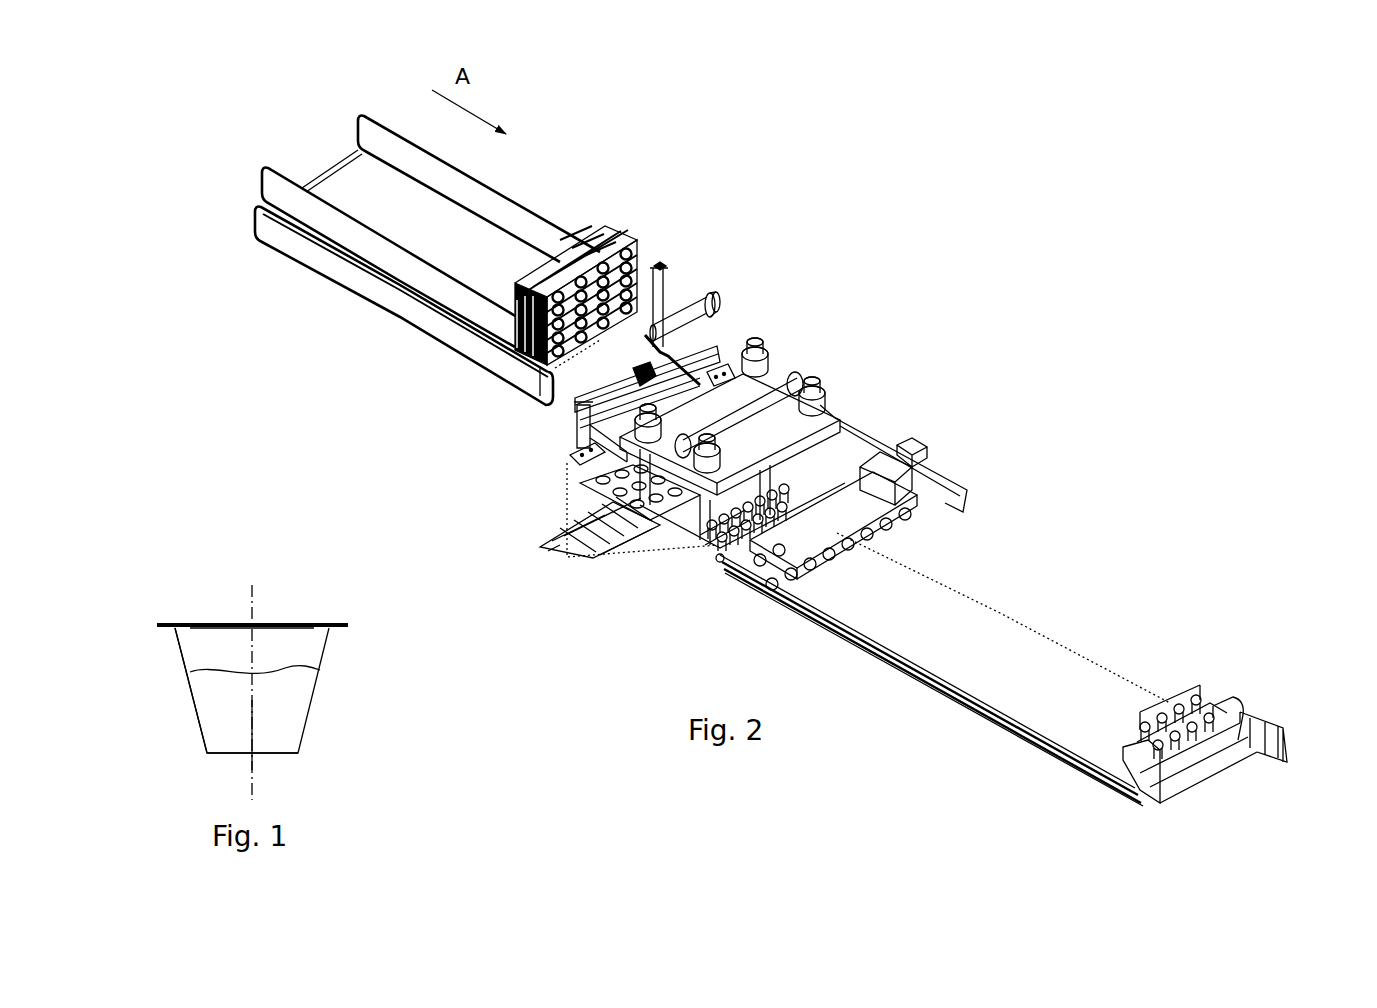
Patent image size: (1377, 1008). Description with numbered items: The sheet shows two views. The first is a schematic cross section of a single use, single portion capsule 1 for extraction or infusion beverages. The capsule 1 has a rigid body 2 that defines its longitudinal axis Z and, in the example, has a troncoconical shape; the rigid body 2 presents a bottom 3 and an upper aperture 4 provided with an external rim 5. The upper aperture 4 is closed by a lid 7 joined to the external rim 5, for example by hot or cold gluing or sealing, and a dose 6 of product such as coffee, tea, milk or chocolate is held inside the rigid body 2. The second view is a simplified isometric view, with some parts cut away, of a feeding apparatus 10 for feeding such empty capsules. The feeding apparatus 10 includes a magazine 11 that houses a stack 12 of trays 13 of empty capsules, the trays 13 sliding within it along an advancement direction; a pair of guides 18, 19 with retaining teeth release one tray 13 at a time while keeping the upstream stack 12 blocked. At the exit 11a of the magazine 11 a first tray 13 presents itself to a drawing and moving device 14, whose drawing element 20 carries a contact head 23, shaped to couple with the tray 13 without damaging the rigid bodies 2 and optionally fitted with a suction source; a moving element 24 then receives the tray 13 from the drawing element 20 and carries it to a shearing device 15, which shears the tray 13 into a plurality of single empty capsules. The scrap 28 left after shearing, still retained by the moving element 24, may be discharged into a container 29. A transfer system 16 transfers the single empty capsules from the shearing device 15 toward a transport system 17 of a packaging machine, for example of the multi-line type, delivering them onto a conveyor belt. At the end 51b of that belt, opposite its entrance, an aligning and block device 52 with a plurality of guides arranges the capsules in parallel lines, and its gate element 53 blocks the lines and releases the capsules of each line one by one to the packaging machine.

In FIG. 1, the capsule 1 is at (332, 673).
In FIG. 1, the rigid body 2 is at (197, 707).
In FIG. 1, the bottom 3 is at (225, 757).
In FIG. 1, the upper aperture 4 is at (279, 605).
In FIG. 1, the external rim 5 is at (170, 628).
In FIG. 1, the dose of product 6 is at (288, 703).
In FIG. 1, the lid 7 is at (207, 622).
In FIG. 1, the longitudinal axis Z is at (252, 775).
In FIG. 2, the feeding apparatus 10 is at (793, 466).
In FIG. 2, the magazine 11 is at (562, 182).
In FIG. 2, the exit 11a is at (577, 371).
In FIG. 2, the stack 12 is at (642, 220).
In FIG. 2, the tray 13 is at (528, 275).
In FIG. 2, the drawing and moving device 14 is at (746, 299).
In FIG. 2, the shearing device 15 is at (829, 368).
In FIG. 2, the transfer system 16 is at (945, 433).
In FIG. 2, the transport system 17 is at (1060, 583).
In FIG. 2, the guide 18 is at (557, 240).
In FIG. 2, the guide 19 is at (527, 333).
In FIG. 2, the drawing element 20 is at (622, 353).
In FIG. 2, the contact head 23 is at (523, 317).
In FIG. 2, the moving element 24 is at (735, 341).
In FIG. 2, the scrap 28 is at (560, 543).
In FIG. 2, the container 29 is at (623, 548).
In FIG. 2, the end 51b is at (1239, 687).
In FIG. 2, the aligning and block device 52 is at (1208, 804).
In FIG. 2, the gate element 53 is at (1246, 716).